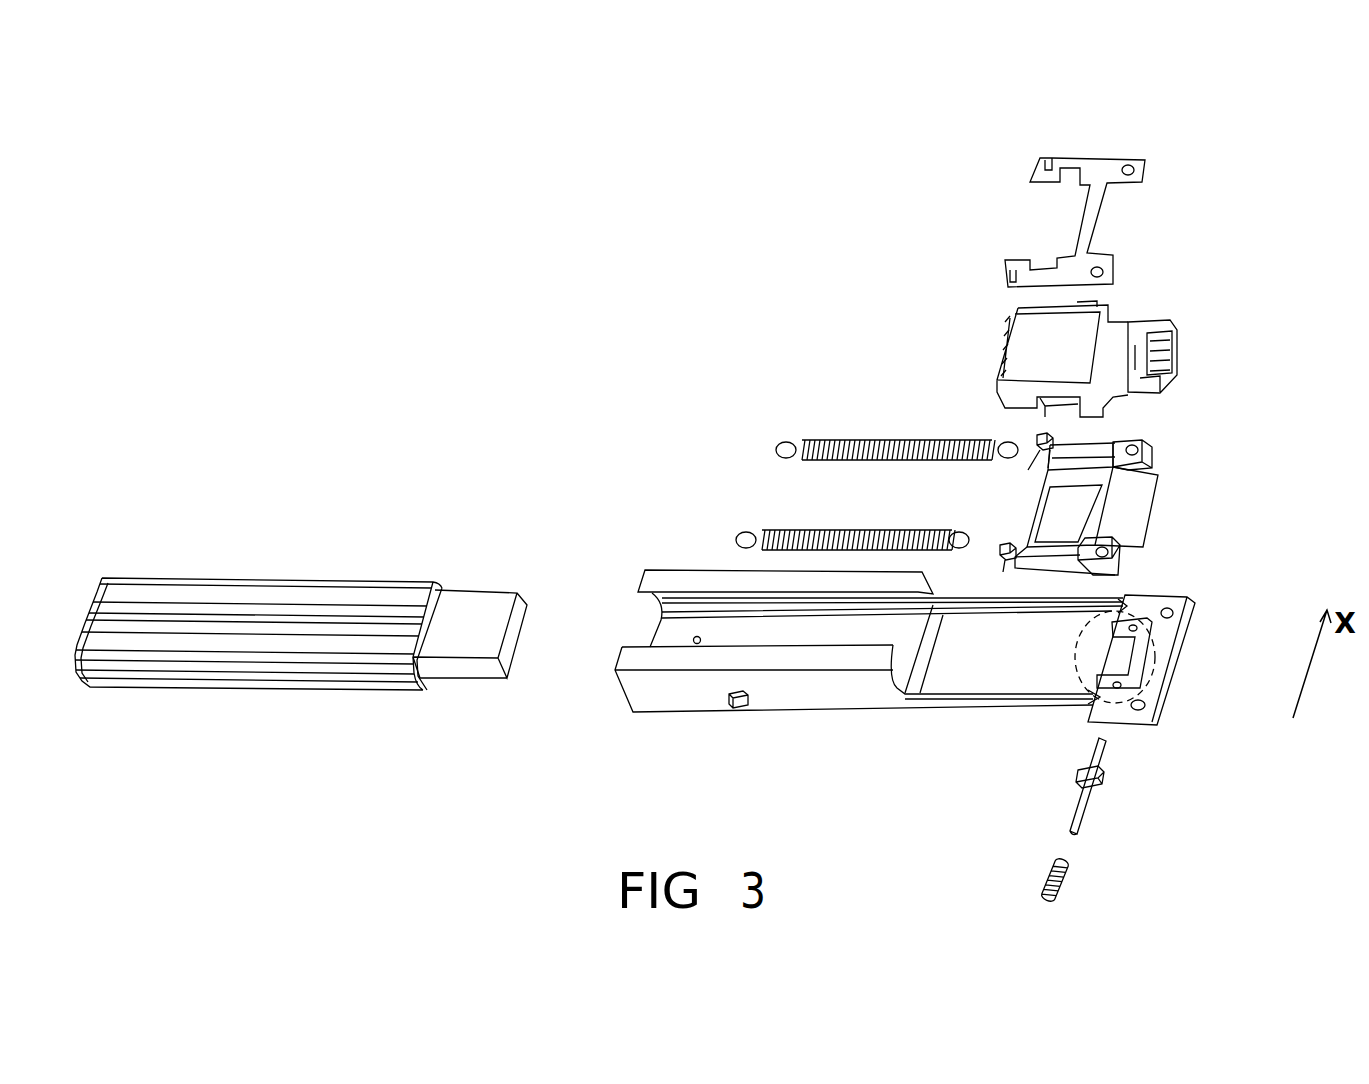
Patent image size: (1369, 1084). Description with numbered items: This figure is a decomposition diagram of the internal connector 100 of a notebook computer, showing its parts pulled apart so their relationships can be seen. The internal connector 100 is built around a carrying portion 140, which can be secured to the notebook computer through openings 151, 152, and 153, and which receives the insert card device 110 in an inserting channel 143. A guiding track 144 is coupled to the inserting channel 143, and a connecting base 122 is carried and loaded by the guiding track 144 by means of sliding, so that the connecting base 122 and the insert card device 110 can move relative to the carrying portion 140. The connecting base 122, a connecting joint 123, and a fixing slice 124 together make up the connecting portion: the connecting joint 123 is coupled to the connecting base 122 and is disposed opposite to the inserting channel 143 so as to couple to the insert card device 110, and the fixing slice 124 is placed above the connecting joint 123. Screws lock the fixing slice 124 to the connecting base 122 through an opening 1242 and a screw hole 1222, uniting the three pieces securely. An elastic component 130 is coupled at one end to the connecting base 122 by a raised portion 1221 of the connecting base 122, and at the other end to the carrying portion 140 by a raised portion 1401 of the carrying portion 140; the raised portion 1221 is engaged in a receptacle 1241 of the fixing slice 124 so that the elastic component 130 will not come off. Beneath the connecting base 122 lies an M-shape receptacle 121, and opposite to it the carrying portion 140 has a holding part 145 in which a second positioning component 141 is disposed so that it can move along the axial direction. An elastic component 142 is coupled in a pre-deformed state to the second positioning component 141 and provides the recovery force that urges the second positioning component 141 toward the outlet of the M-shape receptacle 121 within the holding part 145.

The internal connector 100 is at (947, 791).
The insert card device 110 is at (257, 592).
The M-shape receptacle 121 is at (1170, 492).
The connecting base 122 is at (1150, 480).
The raised portion 1221 is at (1042, 452).
The screw hole 1222 is at (1135, 448).
The connecting joint 123 is at (1100, 320).
The fixing slice 124 is at (1100, 160).
The receptacle 1241 is at (1051, 144).
The opening 1242 is at (1132, 168).
The elastic component 130 is at (835, 447).
The carrying portion 140 is at (905, 647).
The raised portion 1401 is at (733, 710).
The second positioning component 141 is at (1085, 808).
The elastic component 142 is at (1070, 877).
The inserting channel 143 is at (660, 642).
The guiding track 144 is at (1053, 613).
The holding part 145 is at (1165, 672).
The opening 151 is at (1172, 613).
The opening 152 is at (1143, 705).
The opening 153 is at (697, 624).